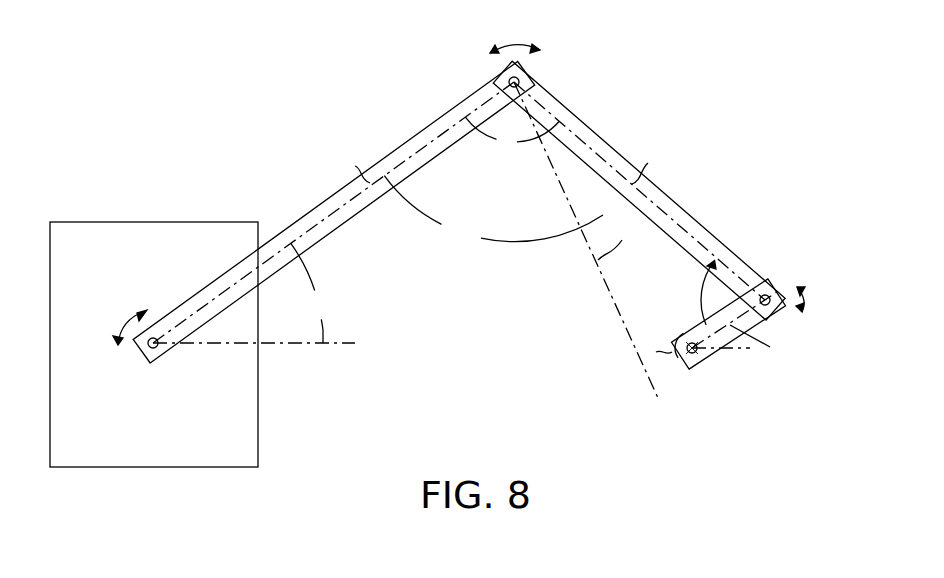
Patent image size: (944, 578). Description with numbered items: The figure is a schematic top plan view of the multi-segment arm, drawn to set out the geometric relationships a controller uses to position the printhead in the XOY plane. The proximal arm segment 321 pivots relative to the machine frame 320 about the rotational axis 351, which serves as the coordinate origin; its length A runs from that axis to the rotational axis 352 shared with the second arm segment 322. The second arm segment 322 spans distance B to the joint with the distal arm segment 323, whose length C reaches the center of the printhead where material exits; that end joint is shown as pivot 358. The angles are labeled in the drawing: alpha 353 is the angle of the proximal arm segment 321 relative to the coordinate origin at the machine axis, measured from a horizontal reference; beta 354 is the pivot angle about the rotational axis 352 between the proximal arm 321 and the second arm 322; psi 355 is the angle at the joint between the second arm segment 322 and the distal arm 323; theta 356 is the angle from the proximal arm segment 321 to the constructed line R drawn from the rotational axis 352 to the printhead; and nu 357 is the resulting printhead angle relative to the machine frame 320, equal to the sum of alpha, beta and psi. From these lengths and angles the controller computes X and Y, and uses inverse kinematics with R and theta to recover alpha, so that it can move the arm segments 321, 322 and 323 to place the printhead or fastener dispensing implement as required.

The machine frame 320 is at (258, 408).
The proximal arm segment 321 is at (360, 212).
The second arm segment 322 is at (685, 210).
The distal arm segment 323 is at (757, 327).
The rotational axis 351 is at (141, 361).
The rotational axis 352 is at (525, 83).
The angle alpha 353 is at (316, 283).
The angle beta 354 is at (536, 142).
The angle psi 355 is at (698, 311).
The angle theta 356 is at (513, 241).
The angle nu 357 is at (680, 343).
The fourth pivot joint 358 is at (787, 268).